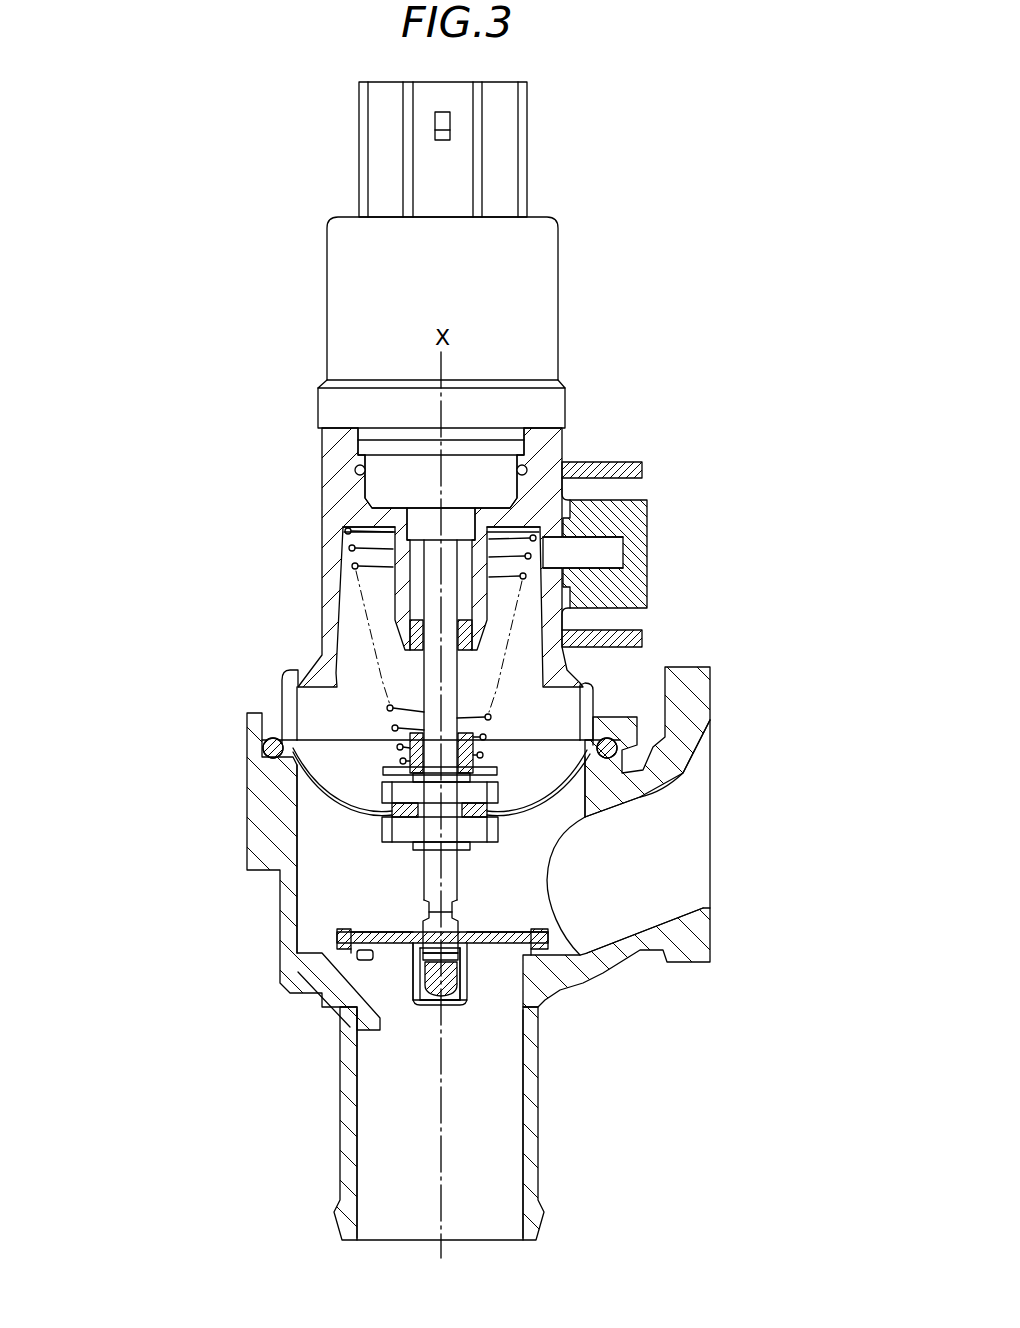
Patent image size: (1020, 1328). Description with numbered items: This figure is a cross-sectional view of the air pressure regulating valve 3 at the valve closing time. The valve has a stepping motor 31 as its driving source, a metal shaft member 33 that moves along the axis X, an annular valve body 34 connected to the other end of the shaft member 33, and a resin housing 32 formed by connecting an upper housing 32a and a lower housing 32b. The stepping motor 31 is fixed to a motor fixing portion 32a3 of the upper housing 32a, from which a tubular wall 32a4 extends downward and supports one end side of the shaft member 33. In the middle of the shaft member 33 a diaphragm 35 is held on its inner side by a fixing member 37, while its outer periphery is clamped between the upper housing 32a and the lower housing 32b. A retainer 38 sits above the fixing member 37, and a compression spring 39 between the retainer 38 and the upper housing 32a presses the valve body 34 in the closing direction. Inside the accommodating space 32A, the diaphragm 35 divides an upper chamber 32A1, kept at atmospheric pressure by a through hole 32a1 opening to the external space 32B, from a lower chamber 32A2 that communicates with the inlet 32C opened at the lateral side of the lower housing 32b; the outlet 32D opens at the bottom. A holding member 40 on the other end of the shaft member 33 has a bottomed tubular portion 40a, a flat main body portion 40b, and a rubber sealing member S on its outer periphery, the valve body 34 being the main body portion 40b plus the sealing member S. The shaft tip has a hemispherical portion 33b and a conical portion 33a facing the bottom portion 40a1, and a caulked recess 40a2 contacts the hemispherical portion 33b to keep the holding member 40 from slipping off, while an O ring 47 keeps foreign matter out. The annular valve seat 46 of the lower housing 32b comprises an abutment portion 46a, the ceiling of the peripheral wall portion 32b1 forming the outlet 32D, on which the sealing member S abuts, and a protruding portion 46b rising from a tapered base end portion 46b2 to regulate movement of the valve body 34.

The air pressure regulating valve 3 is at (709, 219).
The stepping motor 31 is at (327, 262).
The housing 32 is at (451, 823).
The upper housing 32a is at (322, 585).
The through hole 32a1 is at (612, 552).
The motor fixing portion 32a3 is at (322, 440).
The tubular wall 32a4 is at (396, 610).
The accommodating space 32A is at (362, 811).
The upper chamber 32A1 is at (326, 697).
The lower chamber 32A2 is at (318, 809).
The lower housing 32b is at (245, 831).
The peripheral wall portion 32b1 is at (340, 1122).
The external space 32B is at (573, 492).
The inlet 32C is at (696, 840).
The outlet 32D is at (497, 1172).
The shaft member 33 is at (467, 672).
The conical portion 33a is at (462, 975).
The hemispherical portion 33b is at (490, 957).
The valve body 34 is at (555, 937).
The diaphragm 35 is at (358, 823).
The fixing member 37 is at (388, 800).
The retainer 38 is at (402, 762).
The compression spring 39 is at (493, 714).
The holding member 40 is at (405, 987).
The tubular portion 40a is at (412, 962).
The bottom portion 40a1 is at (453, 990).
The recess 40a2 is at (417, 990).
The main body portion 40b is at (498, 934).
The valve seat 46 is at (393, 990).
The abutment portion 46a is at (336, 930).
The protruding portion 46b is at (370, 934).
The base end portion 46b2 is at (368, 962).
The O ring 47 is at (448, 952).
The sealing member S is at (350, 934).